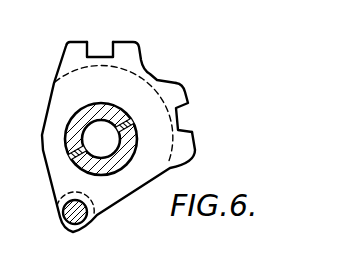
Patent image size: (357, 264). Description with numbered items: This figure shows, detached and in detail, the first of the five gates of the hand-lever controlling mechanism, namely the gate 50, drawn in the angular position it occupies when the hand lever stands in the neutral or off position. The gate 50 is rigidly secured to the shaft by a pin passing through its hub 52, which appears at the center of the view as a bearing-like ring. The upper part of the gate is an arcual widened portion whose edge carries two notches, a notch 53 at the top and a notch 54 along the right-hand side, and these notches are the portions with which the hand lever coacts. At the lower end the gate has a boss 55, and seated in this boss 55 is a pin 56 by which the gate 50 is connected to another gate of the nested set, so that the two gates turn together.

The gate 50 is at (118, 137).
The hub 52 is at (135, 134).
The notch 53 is at (106, 46).
The notch 54 is at (191, 131).
The boss 55 is at (58, 200).
The pin 56 is at (66, 228).